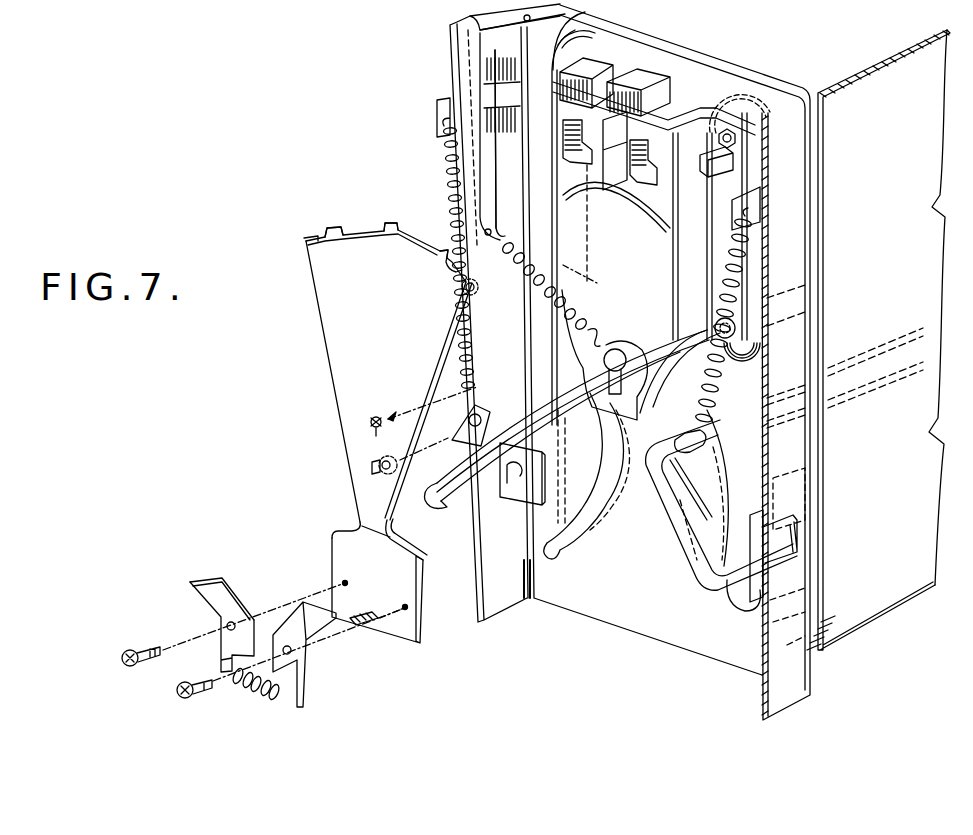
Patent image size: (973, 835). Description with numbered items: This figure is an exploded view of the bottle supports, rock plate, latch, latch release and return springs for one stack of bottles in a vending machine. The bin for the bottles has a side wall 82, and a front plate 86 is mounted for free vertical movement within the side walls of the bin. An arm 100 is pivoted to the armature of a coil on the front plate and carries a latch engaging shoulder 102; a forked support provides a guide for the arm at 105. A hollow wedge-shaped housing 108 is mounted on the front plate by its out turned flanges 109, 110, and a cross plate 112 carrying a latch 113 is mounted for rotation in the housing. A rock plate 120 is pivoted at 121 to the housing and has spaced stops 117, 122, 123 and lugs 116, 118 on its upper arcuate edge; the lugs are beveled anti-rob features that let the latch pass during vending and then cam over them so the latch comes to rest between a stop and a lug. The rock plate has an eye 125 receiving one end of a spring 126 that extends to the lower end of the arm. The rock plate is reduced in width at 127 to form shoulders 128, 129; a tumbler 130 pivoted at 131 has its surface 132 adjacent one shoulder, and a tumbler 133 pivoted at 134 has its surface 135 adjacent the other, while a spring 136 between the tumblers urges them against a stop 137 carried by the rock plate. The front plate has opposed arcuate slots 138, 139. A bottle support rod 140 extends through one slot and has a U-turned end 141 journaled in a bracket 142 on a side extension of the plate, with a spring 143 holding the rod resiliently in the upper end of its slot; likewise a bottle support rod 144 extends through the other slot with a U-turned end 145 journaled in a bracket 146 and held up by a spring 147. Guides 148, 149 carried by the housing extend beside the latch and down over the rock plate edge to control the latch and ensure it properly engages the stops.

The side wall 82 is at (878, 340).
The front plate 86 is at (780, 60).
The arm 100 is at (458, 52).
The latch engaging shoulder 102 is at (497, 190).
The guide 105 is at (553, 70).
The hollow wedge-shaped housing 108 is at (631, 267).
The out turned flange 109 is at (562, 12).
The out turned flange 110 is at (723, 128).
The cross plate 112 is at (688, 152).
The latch 113 is at (608, 148).
The lug 116 is at (306, 241).
The stop 117 is at (334, 226).
The lug 118 is at (463, 288).
The rock plate 120 is at (402, 337).
The pivot 121 is at (372, 468).
The stop 122 is at (390, 222).
The stop 123 is at (440, 262).
The eye 125 is at (373, 418).
The spring 126 is at (586, 316).
The reduced width portion 127 is at (392, 574).
The shoulder 128 is at (338, 531).
The shoulder 129 is at (402, 546).
The tumbler 130 is at (212, 609).
The pivot 131 is at (122, 659).
The surface 132 is at (198, 580).
The tumbler 133 is at (303, 633).
The pivot 134 is at (180, 697).
The surface 135 is at (330, 594).
The spring 136 is at (270, 700).
The stop 137 is at (360, 616).
The arcuate slot 138 is at (556, 550).
The arcuate slot 139 is at (740, 603).
The bottle support rod 140 is at (567, 383).
The U-turned end 141 is at (524, 398).
The bracket 142 is at (560, 452).
The spring 143 is at (444, 148).
The bottle support rod 144 is at (678, 443).
The U-turned end 145 is at (672, 525).
The bracket 146 is at (750, 520).
The spring 147 is at (740, 289).
The guide 148 is at (570, 143).
The guide 149 is at (645, 177).